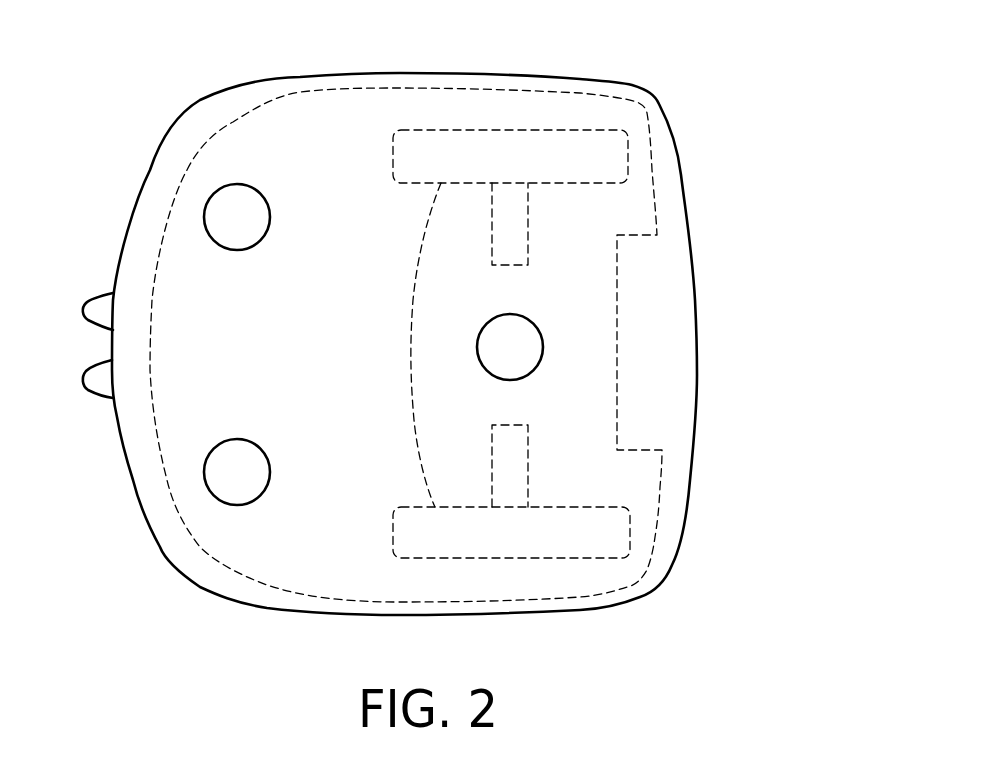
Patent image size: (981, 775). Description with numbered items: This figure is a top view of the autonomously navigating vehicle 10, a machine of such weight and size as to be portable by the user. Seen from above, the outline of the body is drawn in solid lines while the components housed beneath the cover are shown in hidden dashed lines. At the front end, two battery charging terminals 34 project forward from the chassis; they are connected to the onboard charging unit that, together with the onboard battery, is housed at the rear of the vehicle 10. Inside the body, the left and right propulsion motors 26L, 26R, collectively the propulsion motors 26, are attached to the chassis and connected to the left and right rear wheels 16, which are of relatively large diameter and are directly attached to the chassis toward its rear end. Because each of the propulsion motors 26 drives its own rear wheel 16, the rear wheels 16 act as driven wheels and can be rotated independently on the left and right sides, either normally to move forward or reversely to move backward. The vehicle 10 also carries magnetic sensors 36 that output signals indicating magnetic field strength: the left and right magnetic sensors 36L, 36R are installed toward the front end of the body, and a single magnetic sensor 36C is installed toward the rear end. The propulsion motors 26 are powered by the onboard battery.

The autonomously navigating vehicle 10 is at (630, 70).
The rear wheels 16 is at (421, 345).
The propulsion motors 26 is at (763, 193).
The right propulsion motor 26R is at (528, 210).
The left propulsion motor 26L is at (528, 450).
The battery charging terminals 34 is at (86, 312).
The magnetic sensors 36 is at (215, 277).
The right magnetic sensor 36R is at (237, 250).
The left magnetic sensor 36L is at (237, 439).
The center magnetic sensor 36C is at (538, 329).